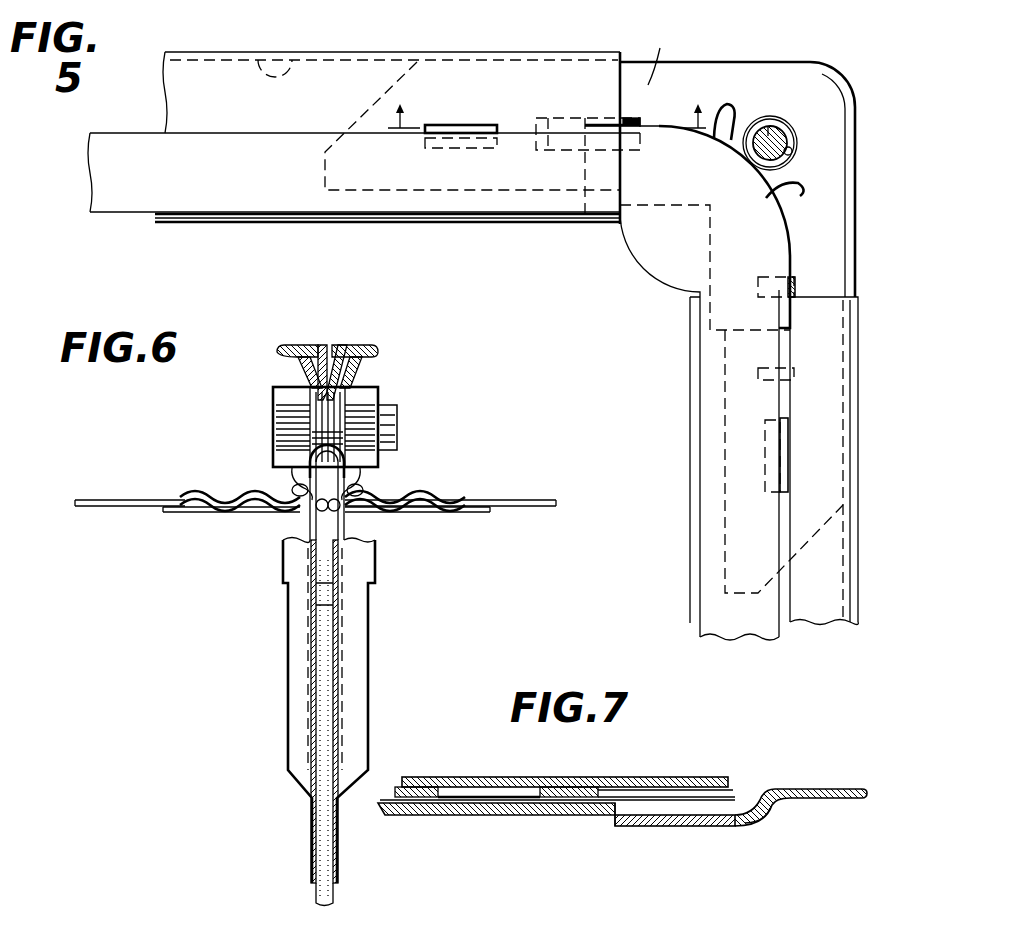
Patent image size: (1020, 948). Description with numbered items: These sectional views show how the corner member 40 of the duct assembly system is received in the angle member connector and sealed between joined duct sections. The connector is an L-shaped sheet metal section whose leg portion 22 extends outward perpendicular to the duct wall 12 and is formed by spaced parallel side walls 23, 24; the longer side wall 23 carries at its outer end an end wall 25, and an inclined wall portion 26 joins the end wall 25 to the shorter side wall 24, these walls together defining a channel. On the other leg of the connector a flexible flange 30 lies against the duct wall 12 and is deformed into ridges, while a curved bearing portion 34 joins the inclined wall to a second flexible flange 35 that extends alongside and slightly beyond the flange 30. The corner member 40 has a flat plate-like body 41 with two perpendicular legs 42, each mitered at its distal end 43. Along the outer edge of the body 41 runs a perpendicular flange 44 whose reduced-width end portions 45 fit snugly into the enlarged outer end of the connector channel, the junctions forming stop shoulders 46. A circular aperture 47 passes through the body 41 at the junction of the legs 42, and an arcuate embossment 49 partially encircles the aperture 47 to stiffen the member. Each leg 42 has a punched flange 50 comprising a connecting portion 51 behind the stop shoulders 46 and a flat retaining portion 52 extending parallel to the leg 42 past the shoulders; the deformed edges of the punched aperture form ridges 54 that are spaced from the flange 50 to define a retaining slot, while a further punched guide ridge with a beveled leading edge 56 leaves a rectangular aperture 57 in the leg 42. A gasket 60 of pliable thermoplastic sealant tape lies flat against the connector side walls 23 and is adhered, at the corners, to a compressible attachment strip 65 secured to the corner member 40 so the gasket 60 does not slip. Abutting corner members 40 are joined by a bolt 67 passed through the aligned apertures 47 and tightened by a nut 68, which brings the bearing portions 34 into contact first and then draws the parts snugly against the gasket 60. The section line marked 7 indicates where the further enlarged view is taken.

In FIG. 5, the section line 7- 7 is at (557, 196).
In FIG. 6, the duct wall 12 is at (96, 500).
In FIG. 5, the leg portion 22 is at (819, 630).
In FIG. 5, the side wall 23 is at (177, 95).
In FIG. 7, the side wall 23 is at (625, 777).
In FIG. 6, the side wall 24 is at (288, 383).
In FIG. 7, the side wall 24 is at (497, 815).
In FIG. 5, the end wall 25 is at (258, 52).
In FIG. 6, the end wall 25 is at (297, 345).
In FIG. 6, the inclined wall portion 26 is at (288, 370).
In FIG. 6, the flexible flange 30 is at (219, 489).
In FIG. 5, the curved bearing portion 34 is at (520, 224).
In FIG. 6, the flexible flange 35 is at (197, 518).
In FIG. 5, the corner member 40 is at (720, 54).
In FIG. 5, the body 41 is at (663, 53).
In FIG. 6, the leg 42 is at (280, 709).
In FIG. 7, the leg 42 is at (850, 789).
In FIG. 5, the mitered distal end 43 is at (848, 528).
In FIG. 6, the mitered distal end 43 is at (313, 843).
In FIG. 6, the flange 44 is at (292, 566).
In FIG. 6, the end portion 45 is at (306, 655).
In FIG. 6, the stop shoulder 46 is at (285, 590).
In FIG. 5, the circular aperture 47 is at (792, 150).
In FIG. 6, the circular aperture 47 is at (312, 418).
In FIG. 5, the arcuate embossment 49 is at (800, 192).
In FIG. 5, the flange 50 is at (540, 130).
In FIG. 7, the flange 50 is at (687, 836).
In FIG. 5, the connecting portion 51 is at (796, 290).
In FIG. 7, the connecting portion 51 is at (768, 822).
In FIG. 5, the retaining portion 52 is at (793, 378).
In FIG. 7, the retaining portion 52 is at (633, 827).
In FIG. 7, the ridge 54 is at (735, 791).
In FIG. 5, the beveled leading edge 56 is at (468, 130).
In FIG. 5, the rectangular aperture 57 is at (783, 472).
In FIG. 7, the rectangular aperture 57 is at (440, 787).
In FIG. 5, the gasket 60 is at (697, 226).
In FIG. 6, the gasket 60 is at (328, 818).
In FIG. 5, the attachment strip 65 is at (792, 254).
In FIG. 6, the attachment strip 65 is at (320, 605).
In FIG. 5, the bolt 67 is at (768, 128).
In FIG. 6, the bolt 67 is at (397, 430).
In FIG. 6, the nut 68 is at (368, 400).